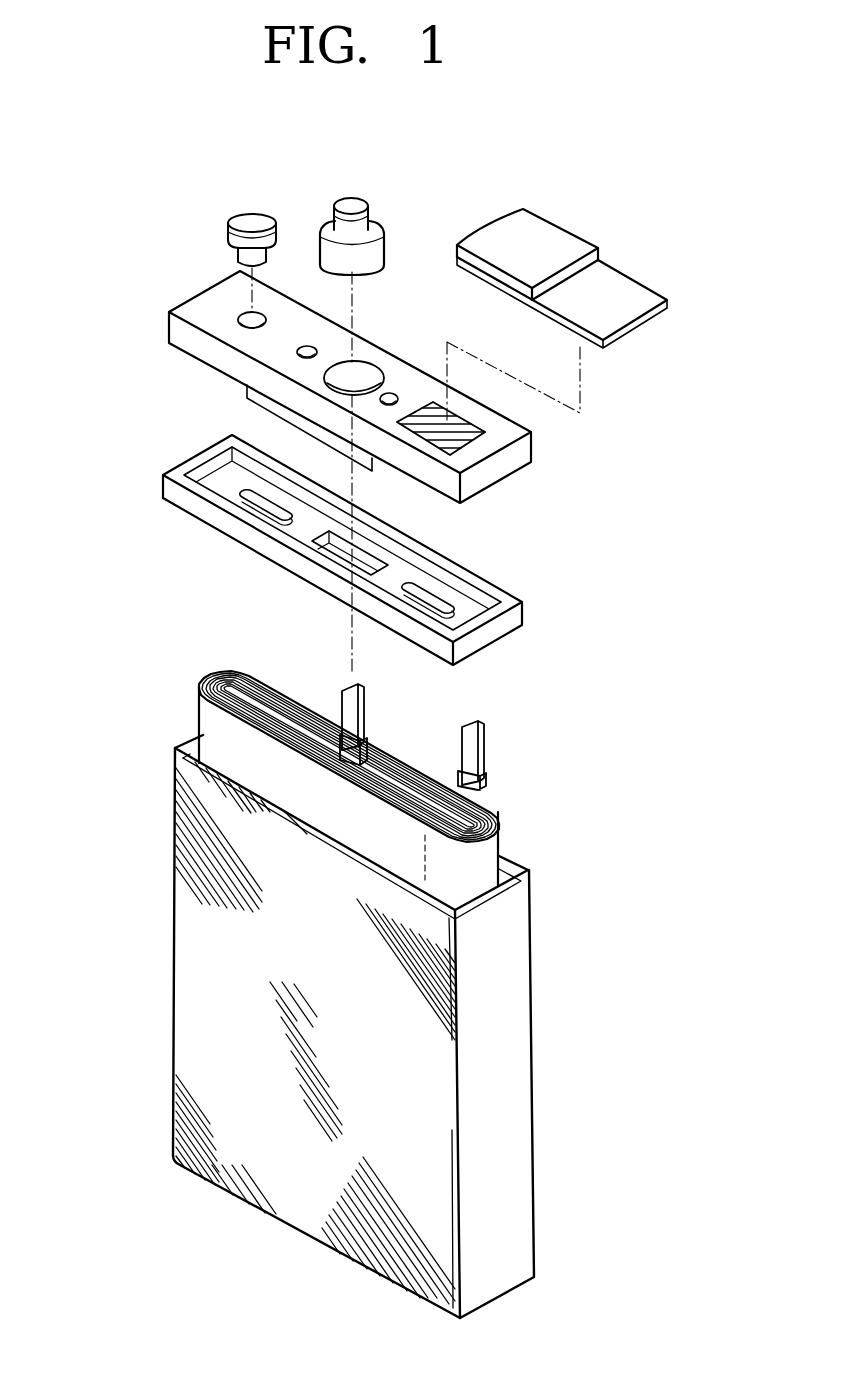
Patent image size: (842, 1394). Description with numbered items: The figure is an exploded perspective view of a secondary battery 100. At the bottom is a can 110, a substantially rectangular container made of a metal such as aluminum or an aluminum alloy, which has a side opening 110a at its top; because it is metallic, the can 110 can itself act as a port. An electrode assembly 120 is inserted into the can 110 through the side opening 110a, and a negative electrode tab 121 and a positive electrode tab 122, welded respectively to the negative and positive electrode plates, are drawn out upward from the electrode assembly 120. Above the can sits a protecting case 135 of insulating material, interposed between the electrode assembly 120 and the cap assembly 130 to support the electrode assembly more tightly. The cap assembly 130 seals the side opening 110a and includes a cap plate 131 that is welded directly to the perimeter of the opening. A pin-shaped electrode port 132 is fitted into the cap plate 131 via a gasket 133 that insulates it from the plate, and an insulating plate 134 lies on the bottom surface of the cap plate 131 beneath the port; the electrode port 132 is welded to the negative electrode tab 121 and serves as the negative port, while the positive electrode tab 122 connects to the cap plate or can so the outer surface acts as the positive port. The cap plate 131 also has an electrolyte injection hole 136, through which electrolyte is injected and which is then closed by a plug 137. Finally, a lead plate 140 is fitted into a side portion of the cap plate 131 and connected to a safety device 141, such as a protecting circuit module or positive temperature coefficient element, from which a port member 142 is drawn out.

The secondary battery 100 is at (128, 203).
The can 110 is at (503, 1065).
The side opening 110a is at (507, 873).
The electrode assembly 120 is at (498, 779).
The negative electrode tab 121 is at (362, 703).
The positive electrode tab 122 is at (480, 732).
The cap assembly 130 is at (181, 359).
The cap plate 131 is at (497, 472).
The electrode port 132 is at (348, 202).
The gasket 133 is at (381, 240).
The insulating plate 134 is at (257, 405).
The protecting case 135 is at (187, 503).
The electrolyte injection hole 136 is at (244, 314).
The plug 137 is at (250, 218).
The lead plate 140 is at (428, 405).
The safety device 141 is at (557, 235).
The port member 142 is at (629, 290).